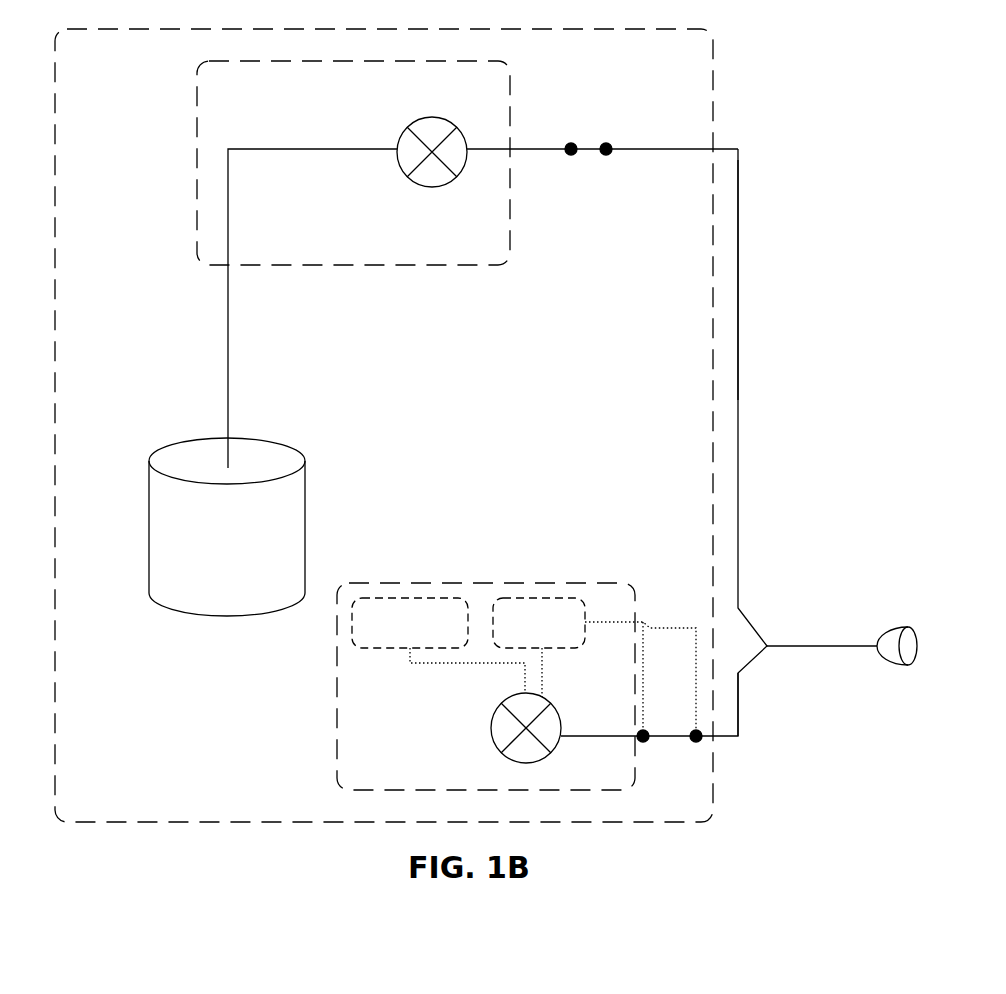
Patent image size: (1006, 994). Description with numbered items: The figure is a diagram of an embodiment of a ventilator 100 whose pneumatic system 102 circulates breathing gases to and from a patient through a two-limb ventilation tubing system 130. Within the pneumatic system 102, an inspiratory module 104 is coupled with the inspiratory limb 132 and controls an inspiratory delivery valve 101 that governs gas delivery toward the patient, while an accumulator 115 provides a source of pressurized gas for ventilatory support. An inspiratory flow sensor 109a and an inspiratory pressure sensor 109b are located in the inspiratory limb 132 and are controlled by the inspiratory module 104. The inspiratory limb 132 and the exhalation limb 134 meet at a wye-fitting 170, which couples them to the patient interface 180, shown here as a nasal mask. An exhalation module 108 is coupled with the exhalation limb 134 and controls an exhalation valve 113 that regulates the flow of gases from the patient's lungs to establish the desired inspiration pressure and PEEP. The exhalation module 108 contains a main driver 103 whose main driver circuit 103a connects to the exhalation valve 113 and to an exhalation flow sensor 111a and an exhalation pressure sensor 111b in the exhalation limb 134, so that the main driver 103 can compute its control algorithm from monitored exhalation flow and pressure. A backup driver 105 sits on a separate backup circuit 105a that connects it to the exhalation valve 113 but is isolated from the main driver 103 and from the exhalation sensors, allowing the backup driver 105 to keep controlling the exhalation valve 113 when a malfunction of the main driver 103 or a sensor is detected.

The ventilator 100 is at (906, 88).
The inspiratory delivery valve 101 is at (407, 130).
The pneumatic system 102 is at (722, 88).
The main driver 103 is at (560, 598).
The main driver circuit 103a is at (542, 693).
The inspiratory module 104 is at (512, 102).
The backup driver 105 is at (410, 598).
The backup circuit 105a is at (430, 665).
The exhalation module 108 is at (335, 740).
The inspiratory flow sensor 109a is at (573, 144).
The inspiratory pressure sensor 109b is at (606, 156).
The exhalation flow sensor 111a is at (645, 742).
The exhalation pressure sensor 111b is at (700, 741).
The exhalation valve 113 is at (493, 750).
The accumulator 115 is at (252, 457).
The ventilation tubing system 130 is at (762, 320).
The inspiratory limb 132 is at (738, 197).
The exhalation limb 134 is at (738, 722).
The wye-fitting 170 is at (763, 632).
The patient interface 180 is at (895, 625).